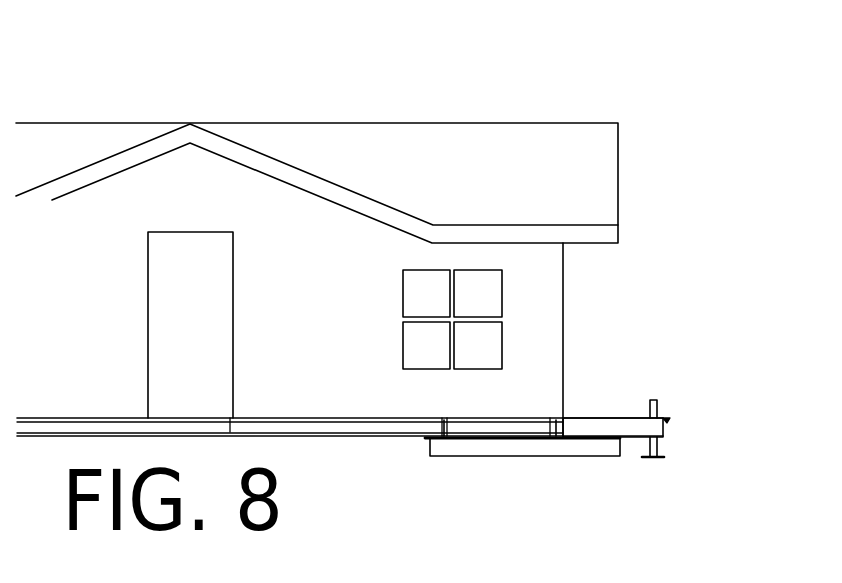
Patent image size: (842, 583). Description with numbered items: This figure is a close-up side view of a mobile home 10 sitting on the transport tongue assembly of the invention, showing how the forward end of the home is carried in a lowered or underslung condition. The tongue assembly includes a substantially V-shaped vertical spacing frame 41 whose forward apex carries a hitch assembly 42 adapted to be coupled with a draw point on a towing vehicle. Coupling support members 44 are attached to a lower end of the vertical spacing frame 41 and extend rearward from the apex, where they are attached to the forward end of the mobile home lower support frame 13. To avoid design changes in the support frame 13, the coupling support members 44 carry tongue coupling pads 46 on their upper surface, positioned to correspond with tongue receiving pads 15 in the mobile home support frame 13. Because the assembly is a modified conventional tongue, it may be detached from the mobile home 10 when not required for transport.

The mobile home 10 is at (82, 137).
The mobile home lower support frame 13 is at (310, 445).
The tongue receiving pads 15 is at (442, 433).
The vertical spacing frame 41 is at (627, 402).
The hitch assembly 42 is at (673, 417).
The coupling support members 44 is at (513, 445).
The tongue coupling pads 46 is at (452, 438).